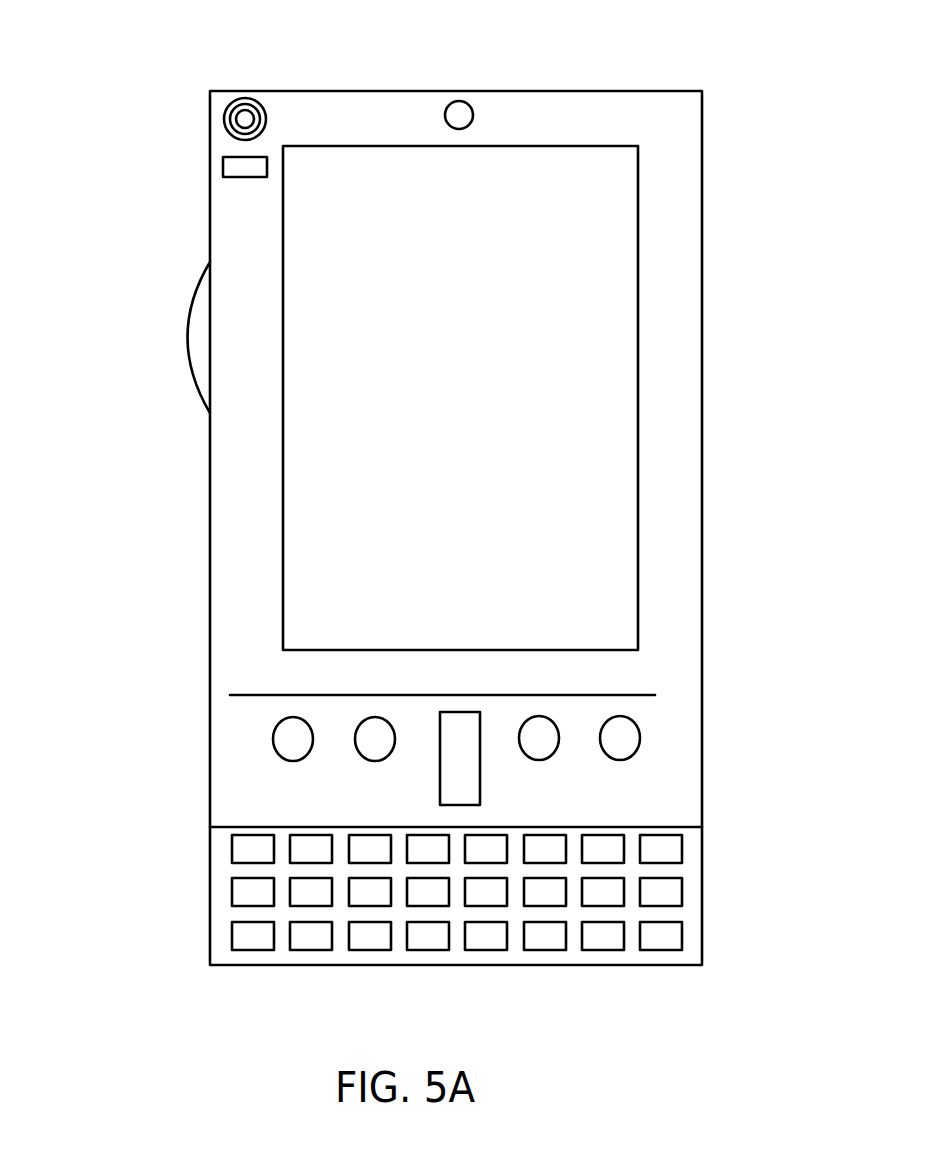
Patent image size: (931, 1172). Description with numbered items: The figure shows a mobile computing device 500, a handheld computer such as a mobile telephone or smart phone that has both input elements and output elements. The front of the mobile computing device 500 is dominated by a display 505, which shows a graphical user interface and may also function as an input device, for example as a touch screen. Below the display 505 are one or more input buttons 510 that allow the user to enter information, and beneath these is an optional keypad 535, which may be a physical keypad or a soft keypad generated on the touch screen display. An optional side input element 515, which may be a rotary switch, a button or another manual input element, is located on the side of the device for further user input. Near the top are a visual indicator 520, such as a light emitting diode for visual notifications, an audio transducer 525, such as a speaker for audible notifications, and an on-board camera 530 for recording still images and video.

The mobile computing device 500 is at (690, 108).
The display 505 is at (392, 565).
The input buttons 510 is at (458, 765).
The side input element 515 is at (200, 338).
The visual indicator 520 is at (223, 170).
The audio transducer 525 is at (225, 120).
The on-board camera 530 is at (473, 113).
The keypad 535 is at (218, 942).